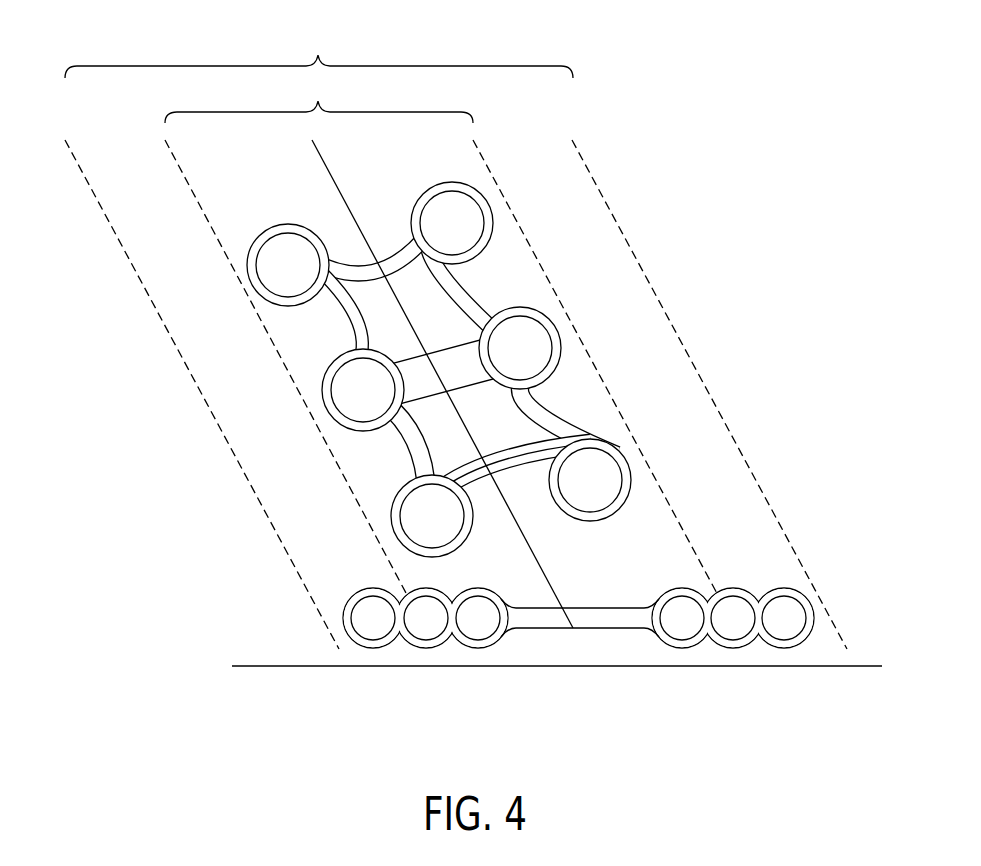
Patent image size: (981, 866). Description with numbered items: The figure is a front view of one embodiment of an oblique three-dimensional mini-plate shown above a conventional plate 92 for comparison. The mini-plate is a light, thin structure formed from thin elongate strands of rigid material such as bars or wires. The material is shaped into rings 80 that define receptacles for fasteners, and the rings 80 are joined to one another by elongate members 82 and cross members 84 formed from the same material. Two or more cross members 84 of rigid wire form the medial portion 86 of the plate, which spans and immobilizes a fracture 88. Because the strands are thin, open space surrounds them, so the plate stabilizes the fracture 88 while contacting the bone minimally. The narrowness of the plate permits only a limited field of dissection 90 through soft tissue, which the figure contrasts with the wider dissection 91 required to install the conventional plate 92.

The rings 80 is at (627, 473).
The elongate members 82 is at (452, 278).
The cross members 84 is at (447, 330).
The medial portion 86 is at (520, 463).
The fracture 88 is at (339, 186).
The limited field of dissection 90 is at (453, 356).
The dissection 91 is at (456, 337).
The conventional plate 92 is at (602, 628).